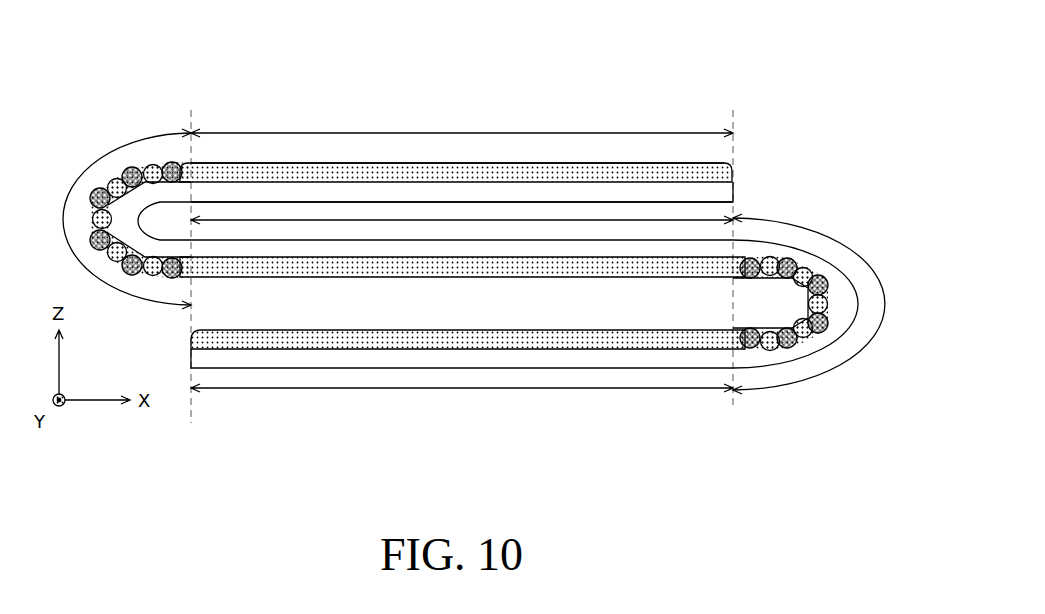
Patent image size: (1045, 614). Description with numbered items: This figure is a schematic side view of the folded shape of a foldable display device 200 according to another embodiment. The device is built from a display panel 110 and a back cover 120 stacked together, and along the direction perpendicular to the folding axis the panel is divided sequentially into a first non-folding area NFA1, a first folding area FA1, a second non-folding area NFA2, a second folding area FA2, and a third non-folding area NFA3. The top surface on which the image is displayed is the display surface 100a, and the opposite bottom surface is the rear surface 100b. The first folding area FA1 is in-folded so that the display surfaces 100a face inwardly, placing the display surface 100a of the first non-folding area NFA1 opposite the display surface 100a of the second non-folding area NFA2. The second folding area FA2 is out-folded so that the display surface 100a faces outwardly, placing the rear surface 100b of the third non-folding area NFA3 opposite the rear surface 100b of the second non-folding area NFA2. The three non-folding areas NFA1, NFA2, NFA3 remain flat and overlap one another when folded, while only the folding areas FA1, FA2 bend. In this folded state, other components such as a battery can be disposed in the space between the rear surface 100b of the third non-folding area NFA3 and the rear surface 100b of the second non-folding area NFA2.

The foldable display device 200 is at (728, 31).
The display surface 100a is at (590, 212).
The rear surface 100b is at (642, 163).
The display panel 110 is at (718, 191).
The back cover 120 is at (718, 169).
The first folding area FA1 is at (104, 219).
The second folding area FA2 is at (830, 304).
The first non-folding area NFA1 is at (462, 120).
The second non-folding area NFA2 is at (462, 229).
The third non-folding area NFA3 is at (462, 401).